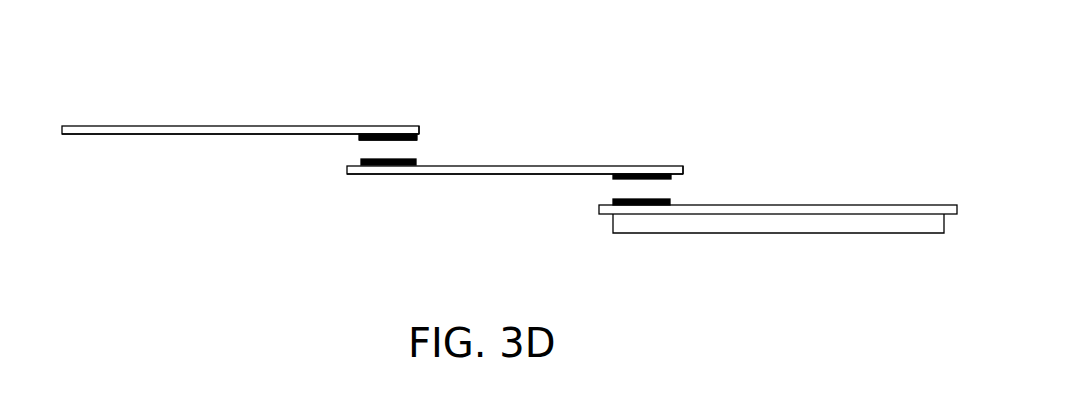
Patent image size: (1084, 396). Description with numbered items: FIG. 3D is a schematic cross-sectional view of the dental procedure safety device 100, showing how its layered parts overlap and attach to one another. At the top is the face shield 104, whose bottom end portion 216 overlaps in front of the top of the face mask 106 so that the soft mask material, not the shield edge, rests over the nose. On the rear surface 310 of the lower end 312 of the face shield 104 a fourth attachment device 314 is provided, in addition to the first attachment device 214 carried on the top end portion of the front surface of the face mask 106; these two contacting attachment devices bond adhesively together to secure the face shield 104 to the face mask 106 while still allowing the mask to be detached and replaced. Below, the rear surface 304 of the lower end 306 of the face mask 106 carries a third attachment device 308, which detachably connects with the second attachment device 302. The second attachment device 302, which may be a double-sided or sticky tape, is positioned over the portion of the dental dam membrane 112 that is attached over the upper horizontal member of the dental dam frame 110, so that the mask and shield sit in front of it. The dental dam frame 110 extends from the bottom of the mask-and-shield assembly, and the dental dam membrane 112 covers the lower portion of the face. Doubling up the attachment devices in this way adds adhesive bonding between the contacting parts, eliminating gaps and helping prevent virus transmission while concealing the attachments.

The dental procedure safety device 100 is at (148, 67).
The face shield 104 is at (210, 126).
The rear surface of lower end of face shield 310 is at (224, 135).
The lower end of face shield 312 is at (398, 133).
The bottom end portion of face shield 216 is at (420, 130).
The fourth attachment device 314 is at (418, 138).
The first attachment device 214 is at (371, 157).
The face mask 106 is at (550, 166).
The rear surface of lower end of face mask 304 is at (480, 176).
The lower end of face mask 306 is at (671, 164).
The third attachment device 308 is at (672, 178).
The second attachment device 302 is at (612, 201).
The dental dam membrane 112 is at (826, 206).
The dental dam frame 110 is at (726, 222).